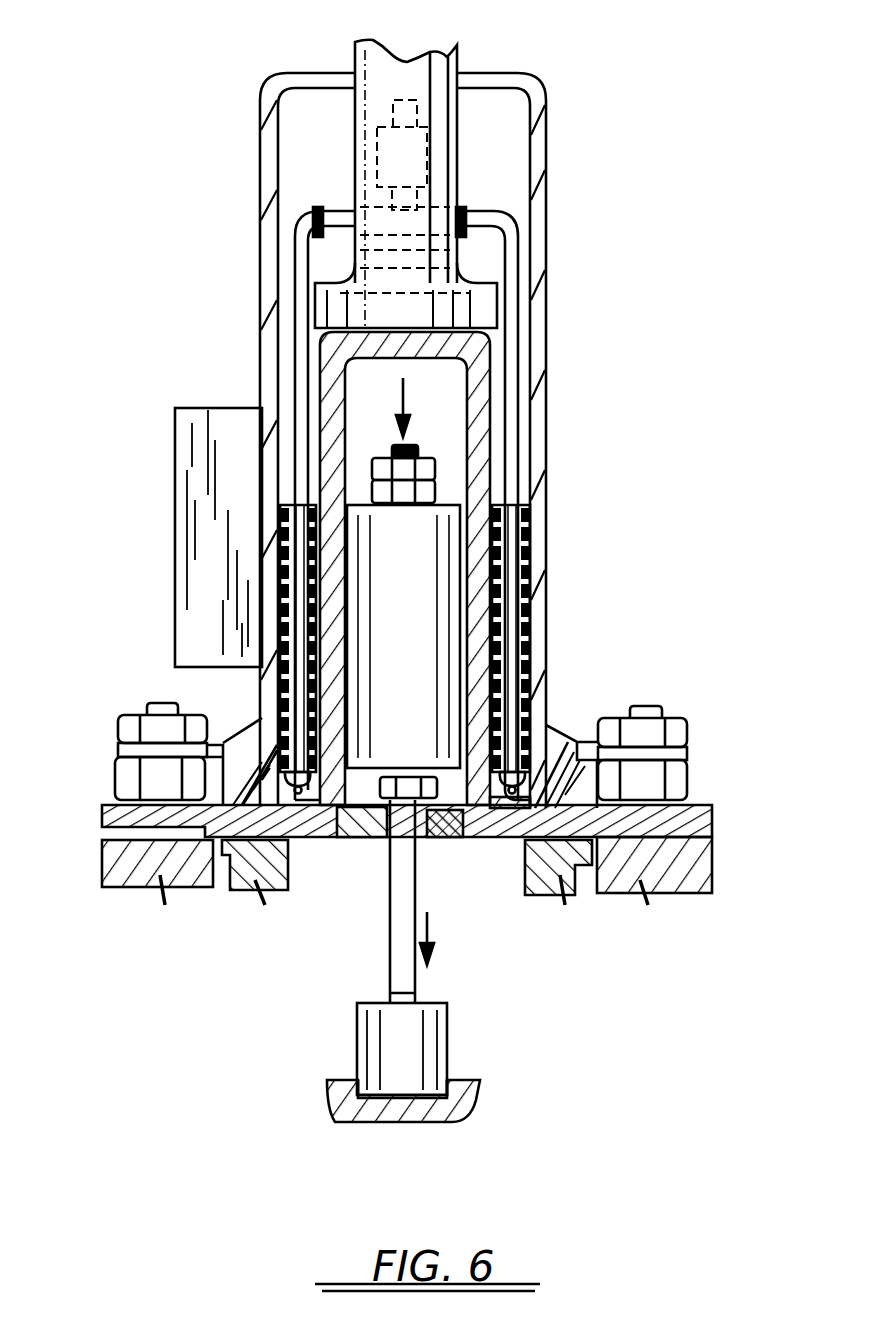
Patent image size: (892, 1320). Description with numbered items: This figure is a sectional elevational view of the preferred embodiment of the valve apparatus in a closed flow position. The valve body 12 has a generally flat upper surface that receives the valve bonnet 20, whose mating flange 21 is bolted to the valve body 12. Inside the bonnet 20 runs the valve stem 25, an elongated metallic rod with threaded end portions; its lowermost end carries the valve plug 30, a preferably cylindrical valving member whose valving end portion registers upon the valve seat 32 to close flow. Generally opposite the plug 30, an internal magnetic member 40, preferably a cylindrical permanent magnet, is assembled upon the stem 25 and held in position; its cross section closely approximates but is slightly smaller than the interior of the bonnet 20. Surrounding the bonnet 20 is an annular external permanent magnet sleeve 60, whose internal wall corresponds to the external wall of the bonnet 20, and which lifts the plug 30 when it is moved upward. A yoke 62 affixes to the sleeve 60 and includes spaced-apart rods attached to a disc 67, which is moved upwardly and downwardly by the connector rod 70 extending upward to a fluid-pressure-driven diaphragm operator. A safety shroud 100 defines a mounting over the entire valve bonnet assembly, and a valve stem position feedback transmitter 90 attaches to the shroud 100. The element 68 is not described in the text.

The safety shroud 100 is at (547, 660).
The connector rod 70 is at (425, 103).
The hidden coupling element 68 is at (417, 155).
The disc 67 is at (415, 218).
The yoke 62 is at (520, 333).
The internal magnetic member 40 is at (425, 570).
The valve bonnet 20 is at (478, 405).
The external permanent magnet sleeve 60 is at (535, 512).
The valve stem position feedback transmitter 90 is at (173, 470).
The mating flange 21 is at (712, 808).
The valve body 12 is at (712, 862).
The valve stem 25 is at (390, 932).
The valve plug 30 is at (372, 1045).
The valve seat 32 is at (460, 1083).